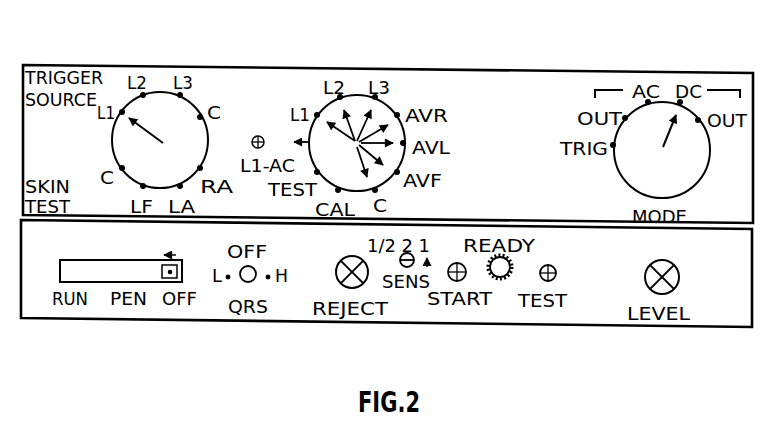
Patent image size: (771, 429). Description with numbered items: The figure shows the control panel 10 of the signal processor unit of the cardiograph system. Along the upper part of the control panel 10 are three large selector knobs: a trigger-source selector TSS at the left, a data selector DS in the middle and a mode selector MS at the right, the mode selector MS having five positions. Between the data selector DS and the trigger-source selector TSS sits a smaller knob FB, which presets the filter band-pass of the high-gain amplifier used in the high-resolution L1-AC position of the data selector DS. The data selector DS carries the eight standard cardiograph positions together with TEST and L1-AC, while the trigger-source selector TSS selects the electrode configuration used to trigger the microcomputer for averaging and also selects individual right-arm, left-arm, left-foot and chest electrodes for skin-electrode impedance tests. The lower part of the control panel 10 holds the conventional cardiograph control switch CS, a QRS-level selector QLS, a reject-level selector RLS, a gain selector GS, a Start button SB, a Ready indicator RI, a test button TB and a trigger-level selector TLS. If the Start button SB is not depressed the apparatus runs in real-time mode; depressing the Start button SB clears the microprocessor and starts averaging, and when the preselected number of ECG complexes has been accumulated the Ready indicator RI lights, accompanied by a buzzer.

The control panel 10 is at (513, 62).
The trigger-source selector TSS is at (192, 102).
The data selector DS is at (388, 103).
The filter band-pass knob FB is at (258, 136).
The mode selector MS is at (623, 181).
The cardiograph control switch CS is at (64, 260).
The QRS-level selector QLS is at (243, 281).
The reject-level selector RLS is at (335, 268).
The gain selector GS is at (400, 259).
The Start button SB is at (457, 262).
The Ready indicator RI is at (507, 280).
The test button TB is at (556, 268).
The trigger-level selector TLS is at (676, 263).